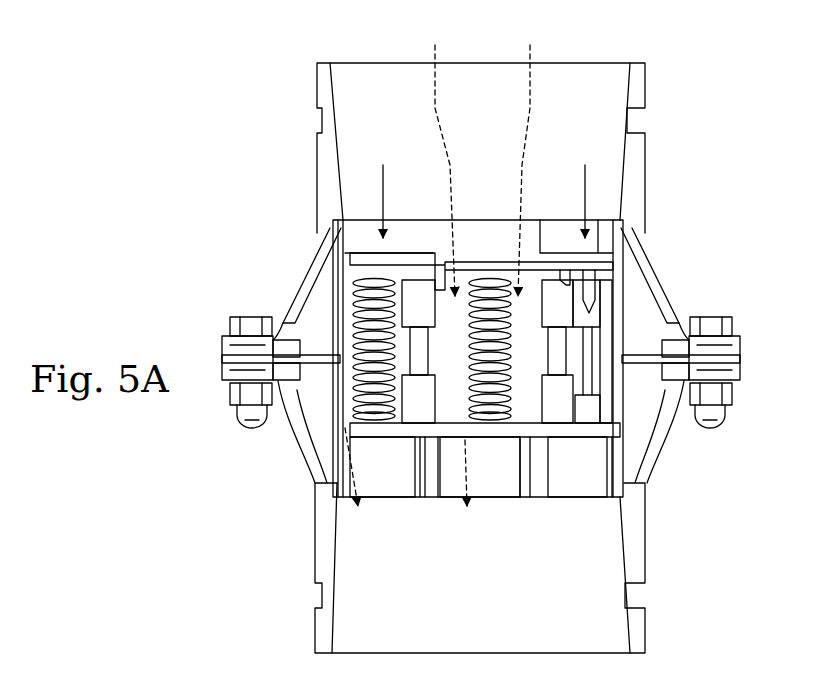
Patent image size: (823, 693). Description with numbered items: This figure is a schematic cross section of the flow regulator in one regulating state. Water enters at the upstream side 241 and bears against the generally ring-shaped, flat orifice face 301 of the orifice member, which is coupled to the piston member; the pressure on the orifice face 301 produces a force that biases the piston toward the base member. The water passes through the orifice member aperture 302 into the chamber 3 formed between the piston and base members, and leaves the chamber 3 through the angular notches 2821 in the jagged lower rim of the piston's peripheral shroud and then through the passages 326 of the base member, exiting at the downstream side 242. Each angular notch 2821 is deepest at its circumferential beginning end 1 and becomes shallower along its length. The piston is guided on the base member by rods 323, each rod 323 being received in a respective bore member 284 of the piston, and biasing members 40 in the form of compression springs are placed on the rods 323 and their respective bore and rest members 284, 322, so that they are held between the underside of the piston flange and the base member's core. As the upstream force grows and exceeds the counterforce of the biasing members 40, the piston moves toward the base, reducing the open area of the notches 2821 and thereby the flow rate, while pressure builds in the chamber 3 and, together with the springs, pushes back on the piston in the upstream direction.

The circumferential beginning end 1 is at (460, 410).
The chamber 3 is at (533, 355).
The biasing members 40 is at (357, 330).
The upstream side 241 is at (508, 104).
The downstream side 242 is at (503, 619).
The bore member 284 is at (413, 287).
The orifice face 301 is at (368, 253).
The orifice member aperture 302 is at (402, 258).
The rest member 322 is at (415, 417).
The rod 323 is at (403, 362).
The passages 326 is at (392, 472).
The angular notches 2821 is at (525, 412).